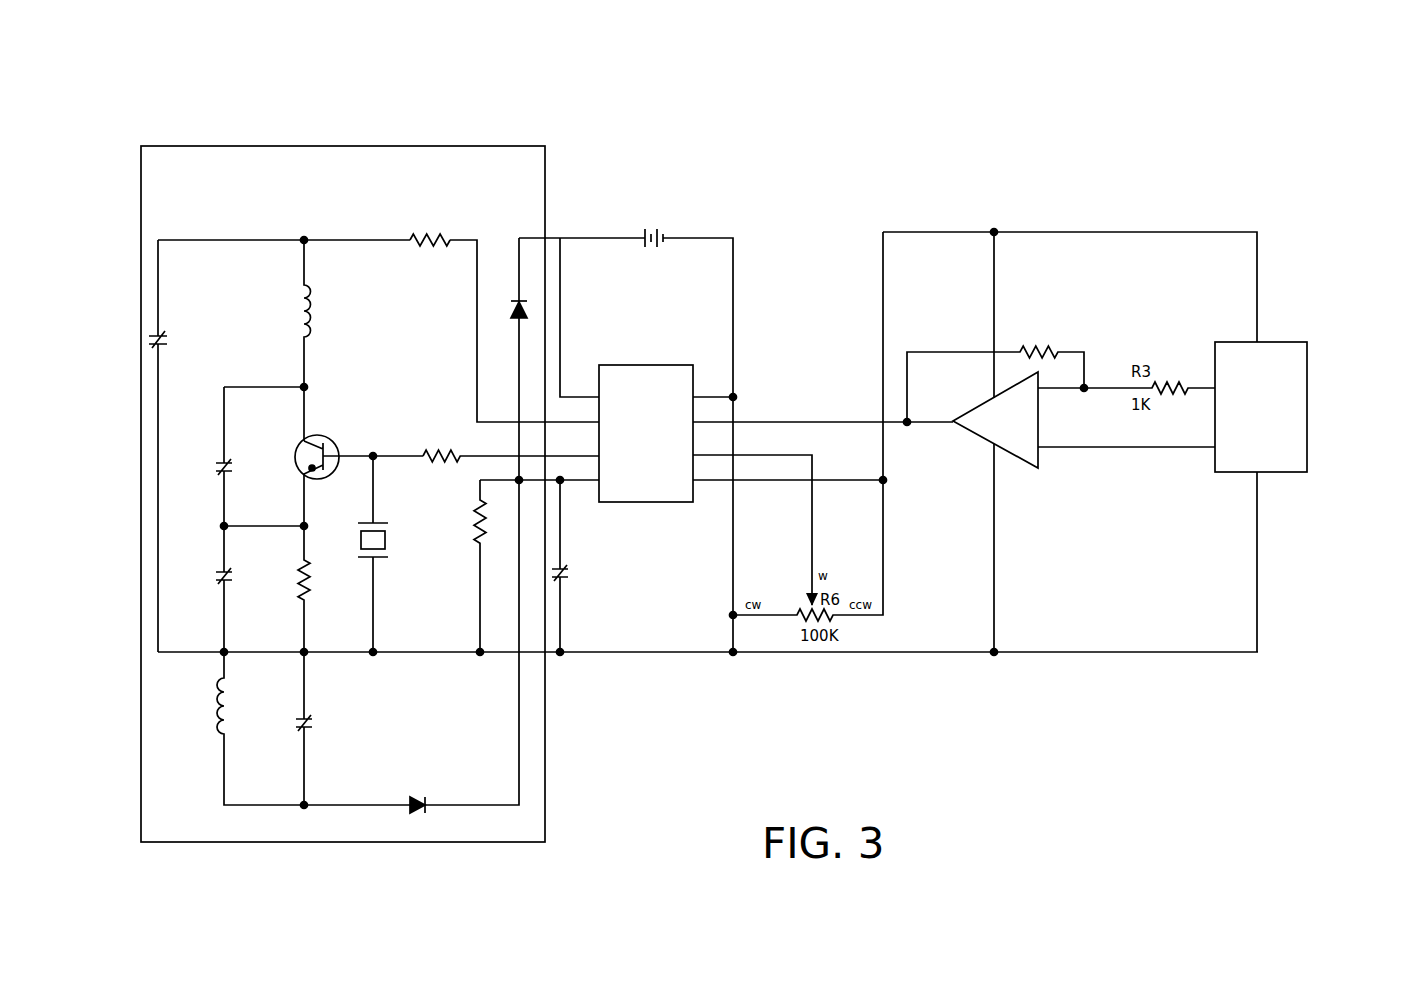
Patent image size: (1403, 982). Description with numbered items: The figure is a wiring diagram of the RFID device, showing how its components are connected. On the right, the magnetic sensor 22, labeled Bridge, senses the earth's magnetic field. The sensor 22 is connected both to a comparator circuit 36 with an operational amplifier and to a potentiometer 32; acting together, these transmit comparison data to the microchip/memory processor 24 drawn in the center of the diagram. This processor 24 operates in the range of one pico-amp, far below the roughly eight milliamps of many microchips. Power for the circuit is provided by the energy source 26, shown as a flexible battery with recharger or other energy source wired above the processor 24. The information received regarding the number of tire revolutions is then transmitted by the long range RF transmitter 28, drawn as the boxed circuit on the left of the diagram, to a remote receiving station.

The sensor 22 is at (1294, 338).
The microchip/memory processor 24 is at (678, 361).
The energy source 26 is at (642, 221).
The long range transmitter 28 is at (172, 144).
The potentiometer 32 is at (1053, 344).
The comparator circuit 36 is at (974, 402).